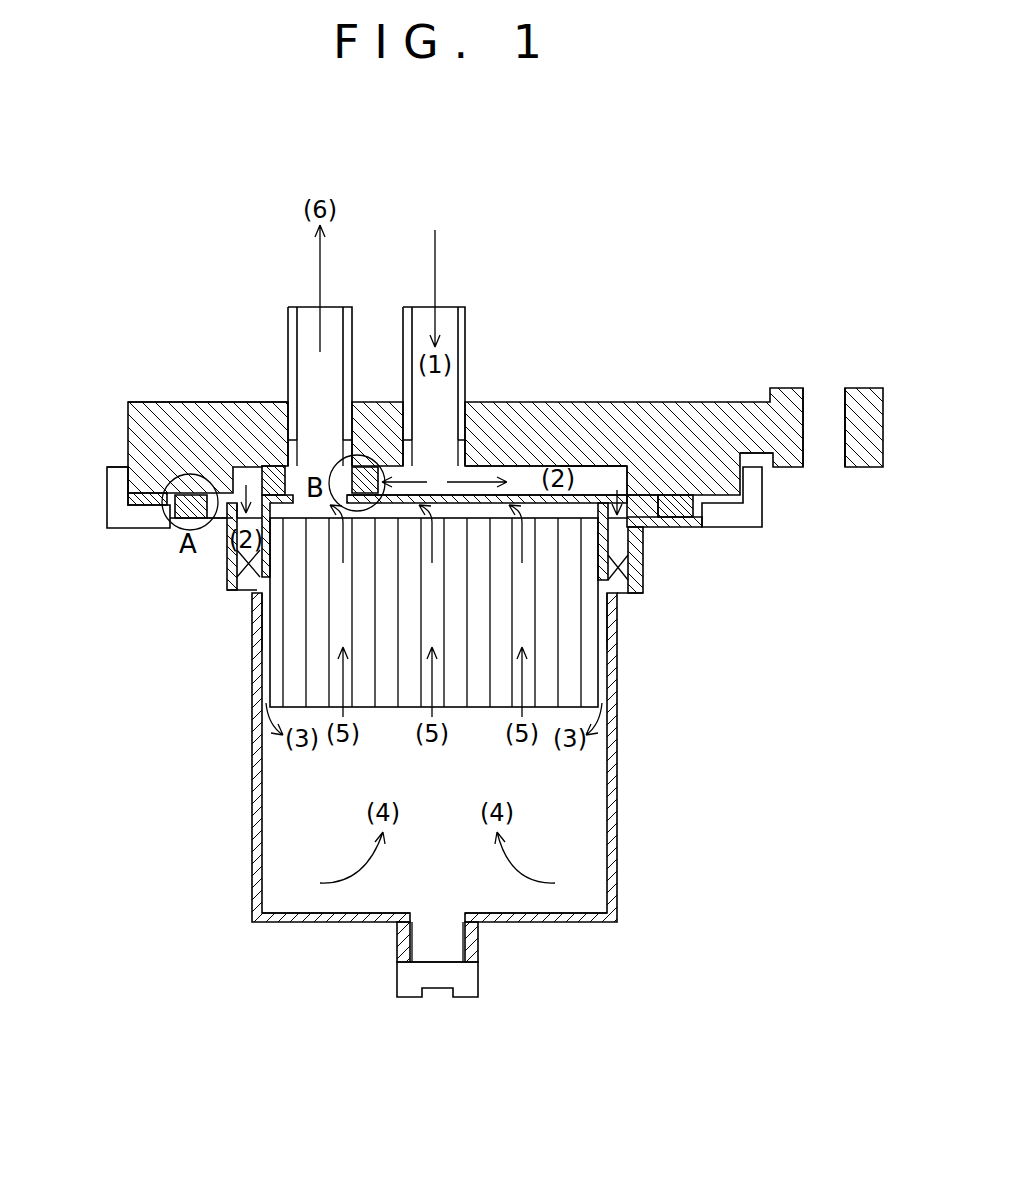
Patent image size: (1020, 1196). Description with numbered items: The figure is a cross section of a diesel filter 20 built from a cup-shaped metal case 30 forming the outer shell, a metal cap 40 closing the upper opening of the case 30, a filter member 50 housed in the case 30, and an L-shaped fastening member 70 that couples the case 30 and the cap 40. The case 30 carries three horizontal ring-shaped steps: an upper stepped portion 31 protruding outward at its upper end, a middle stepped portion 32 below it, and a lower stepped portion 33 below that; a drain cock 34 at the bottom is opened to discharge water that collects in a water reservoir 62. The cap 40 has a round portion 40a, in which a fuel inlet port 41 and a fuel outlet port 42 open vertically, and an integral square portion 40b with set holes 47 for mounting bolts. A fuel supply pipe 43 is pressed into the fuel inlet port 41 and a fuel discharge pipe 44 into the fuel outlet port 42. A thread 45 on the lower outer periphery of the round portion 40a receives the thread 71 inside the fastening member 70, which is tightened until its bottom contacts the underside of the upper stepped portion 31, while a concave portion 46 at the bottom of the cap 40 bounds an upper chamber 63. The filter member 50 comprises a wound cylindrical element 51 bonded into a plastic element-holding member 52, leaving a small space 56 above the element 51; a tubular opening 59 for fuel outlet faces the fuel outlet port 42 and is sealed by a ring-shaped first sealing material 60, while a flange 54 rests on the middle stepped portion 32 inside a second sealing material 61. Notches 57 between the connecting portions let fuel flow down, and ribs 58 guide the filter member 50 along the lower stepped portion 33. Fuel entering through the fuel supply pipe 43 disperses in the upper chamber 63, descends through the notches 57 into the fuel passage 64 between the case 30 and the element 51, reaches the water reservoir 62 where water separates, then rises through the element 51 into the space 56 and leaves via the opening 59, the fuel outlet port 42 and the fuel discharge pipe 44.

The diesel filter 20 is at (863, 378).
The case 30 is at (632, 780).
The upper stepped portion 31 is at (127, 503).
The middle stepped portion 32 is at (182, 538).
The lower stepped portion 33 is at (243, 588).
The drain cock 34 is at (468, 983).
The cap 40 is at (169, 386).
The round portion 40a is at (130, 396).
The square portion 40b is at (875, 400).
The fuel inlet port 41 is at (440, 440).
The fuel outlet port 42 is at (297, 452).
The fuel supply pipe 43 is at (464, 307).
The fuel discharge pipe 44 is at (288, 307).
The thread 45 is at (112, 466).
The concave portion 46 is at (628, 490).
The set holes 47 is at (823, 400).
The filter member 50 is at (622, 658).
The element 51 is at (590, 606).
The element-holding member 52 is at (523, 482).
The flange 54 is at (127, 465).
The space 56 is at (533, 497).
The notches 57 is at (643, 538).
The ribs 58 is at (227, 562).
The opening for fuel outlet 59 is at (357, 455).
The first sealing material 60 is at (262, 470).
The second sealing material 61 is at (167, 510).
The water reservoir 62 is at (285, 843).
The upper chamber 63 is at (597, 497).
The fuel passage 64 is at (265, 656).
The fastening member 70 is at (753, 503).
The thread 71 is at (107, 497).